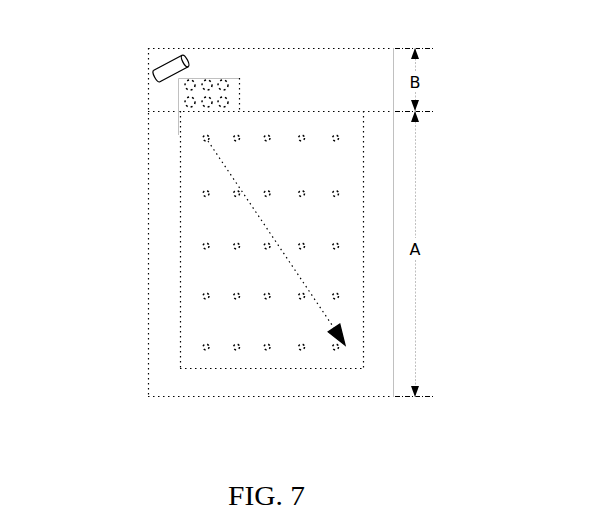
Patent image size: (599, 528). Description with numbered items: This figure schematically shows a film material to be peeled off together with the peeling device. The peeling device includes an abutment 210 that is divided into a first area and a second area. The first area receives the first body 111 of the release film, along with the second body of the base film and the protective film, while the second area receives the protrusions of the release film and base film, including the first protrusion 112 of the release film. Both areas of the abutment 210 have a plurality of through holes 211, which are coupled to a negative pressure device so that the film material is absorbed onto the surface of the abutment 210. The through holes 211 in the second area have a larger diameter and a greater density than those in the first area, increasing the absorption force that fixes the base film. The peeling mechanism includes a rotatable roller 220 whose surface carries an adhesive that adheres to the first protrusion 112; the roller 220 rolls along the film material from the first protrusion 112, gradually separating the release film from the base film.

The abutment 210 is at (318, 385).
The first body 111 is at (198, 205).
The through holes 211 is at (203, 295).
The first protrusion 112 is at (238, 78).
The roller 220 is at (165, 60).